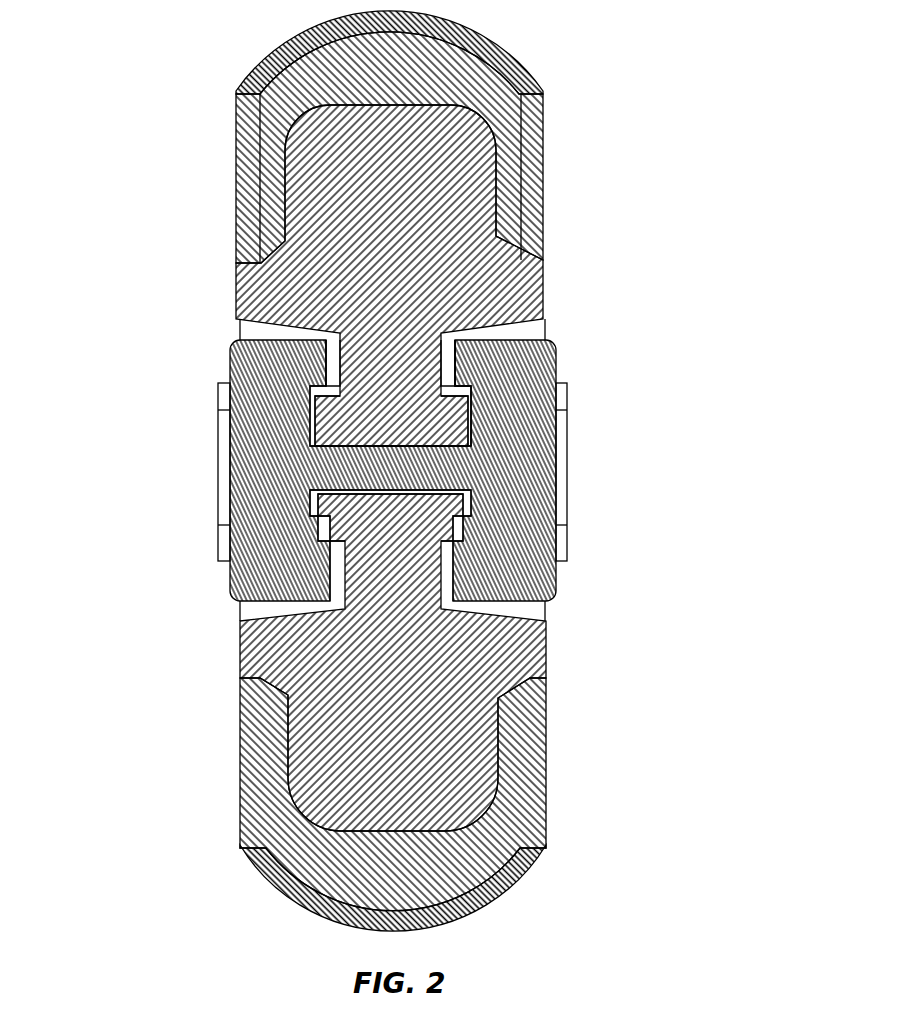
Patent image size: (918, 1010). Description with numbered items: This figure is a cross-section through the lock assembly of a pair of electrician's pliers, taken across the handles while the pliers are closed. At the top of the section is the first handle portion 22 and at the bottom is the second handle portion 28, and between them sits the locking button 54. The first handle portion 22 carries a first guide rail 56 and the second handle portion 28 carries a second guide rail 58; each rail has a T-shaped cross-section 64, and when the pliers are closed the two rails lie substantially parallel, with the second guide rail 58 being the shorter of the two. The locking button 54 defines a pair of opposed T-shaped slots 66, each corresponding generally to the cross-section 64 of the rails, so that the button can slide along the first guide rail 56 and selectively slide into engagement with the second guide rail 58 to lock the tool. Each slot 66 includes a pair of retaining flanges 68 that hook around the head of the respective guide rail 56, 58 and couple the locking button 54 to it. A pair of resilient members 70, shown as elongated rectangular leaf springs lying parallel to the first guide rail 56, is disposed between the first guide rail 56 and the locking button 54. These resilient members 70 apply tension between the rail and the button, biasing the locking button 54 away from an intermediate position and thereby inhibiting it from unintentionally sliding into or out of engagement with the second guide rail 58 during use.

The first handle portion 22 is at (428, 188).
The second handle portion 28 is at (330, 740).
The locking button 54 is at (478, 460).
The first guide rail 56 is at (440, 415).
The second guide rail 58 is at (445, 513).
The T-shaped cross-section 64 is at (340, 417).
The T-shaped slot 66 is at (453, 540).
The retaining flange 68 is at (445, 362).
The resilient member 70 is at (322, 336).